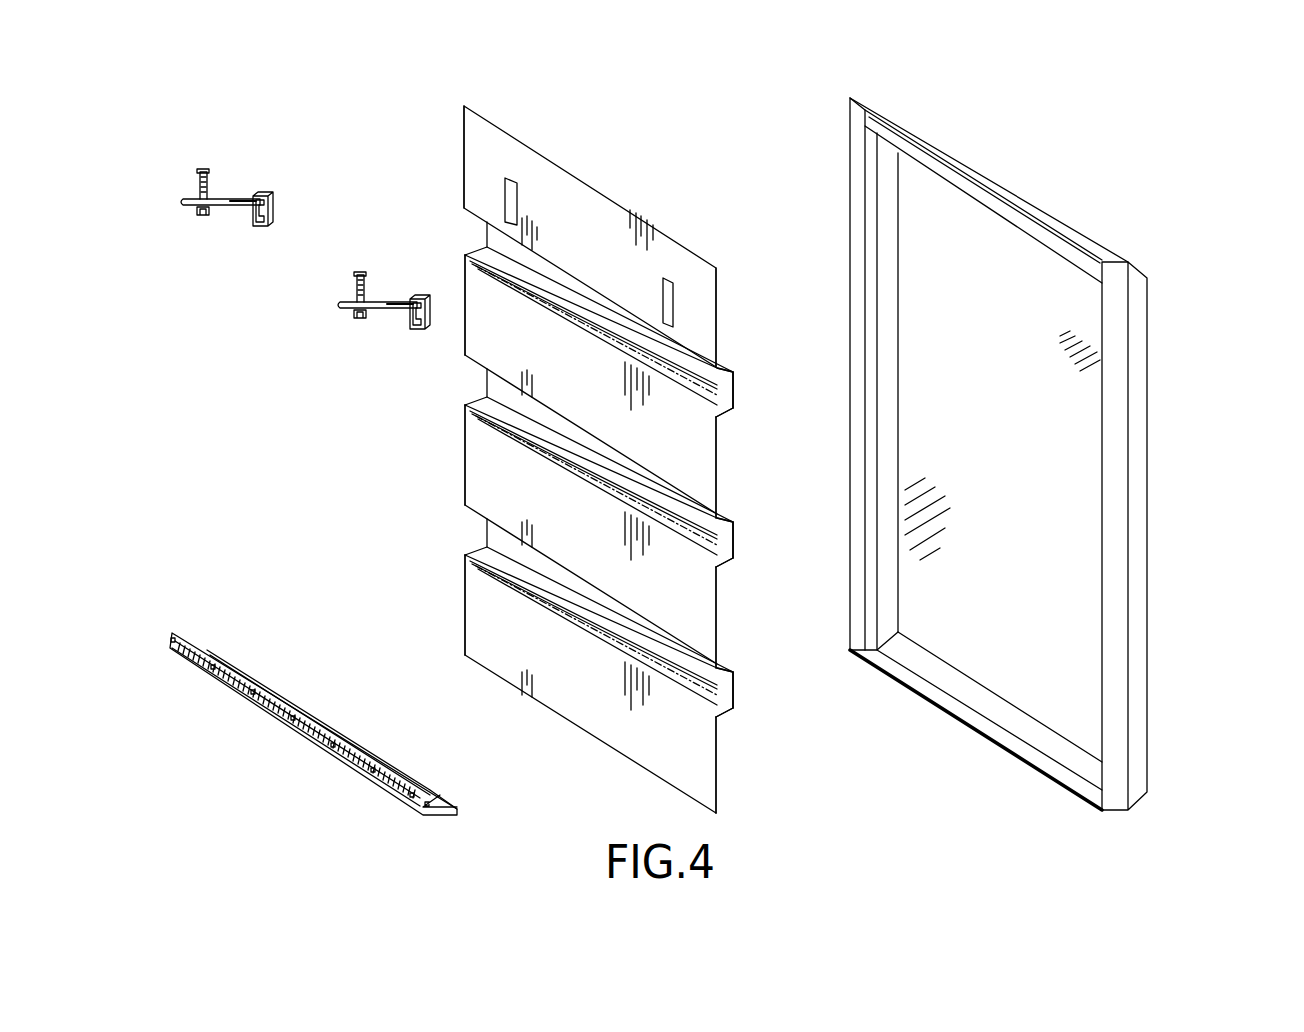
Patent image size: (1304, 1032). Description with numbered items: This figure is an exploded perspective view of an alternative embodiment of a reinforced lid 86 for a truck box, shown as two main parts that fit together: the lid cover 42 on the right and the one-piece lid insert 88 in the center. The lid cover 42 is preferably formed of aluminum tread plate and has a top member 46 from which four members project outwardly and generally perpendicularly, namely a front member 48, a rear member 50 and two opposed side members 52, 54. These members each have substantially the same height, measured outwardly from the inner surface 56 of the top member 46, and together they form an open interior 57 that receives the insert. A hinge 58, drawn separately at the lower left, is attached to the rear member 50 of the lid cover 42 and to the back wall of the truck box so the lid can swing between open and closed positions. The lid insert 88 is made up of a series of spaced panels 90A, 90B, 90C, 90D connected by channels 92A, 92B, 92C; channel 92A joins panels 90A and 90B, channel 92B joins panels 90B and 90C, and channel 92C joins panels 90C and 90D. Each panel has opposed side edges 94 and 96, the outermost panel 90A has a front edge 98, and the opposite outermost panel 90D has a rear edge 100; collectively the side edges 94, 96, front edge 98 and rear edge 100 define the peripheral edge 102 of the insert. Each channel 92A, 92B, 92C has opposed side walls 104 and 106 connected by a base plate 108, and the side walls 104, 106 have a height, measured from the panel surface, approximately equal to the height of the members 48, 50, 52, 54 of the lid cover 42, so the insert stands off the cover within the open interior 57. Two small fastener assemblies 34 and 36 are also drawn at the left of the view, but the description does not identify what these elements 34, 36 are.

The mounting clip 34 is at (237, 205).
The mounting clip 36 is at (392, 307).
The lid cover 42 is at (1040, 454).
The top member 46 is at (1148, 425).
The front member 48 is at (962, 158).
The rear member 50 is at (1045, 760).
The side member 52 is at (848, 160).
The side member 54 is at (1118, 548).
The inner surface 56 is at (947, 263).
The open interior 57 is at (1025, 267).
The hinge 58 is at (285, 700).
The lid 86 is at (1004, 454).
The lid insert 88 is at (572, 455).
The panel 90A is at (590, 236).
The panel 90B is at (500, 322).
The panel 90C is at (500, 470).
The panel 90D is at (571, 680).
The channel 92A is at (490, 238).
The channel 92B is at (495, 385).
The channel 92C is at (492, 530).
The side edge 94 is at (462, 182).
The side edge 96 is at (717, 310).
The front edge 98 is at (656, 222).
The rear edge 100 is at (562, 718).
The peripheral edge 102 is at (725, 250).
The side wall 104 is at (720, 372).
The side wall 106 is at (722, 417).
The base plate 108 is at (735, 388).